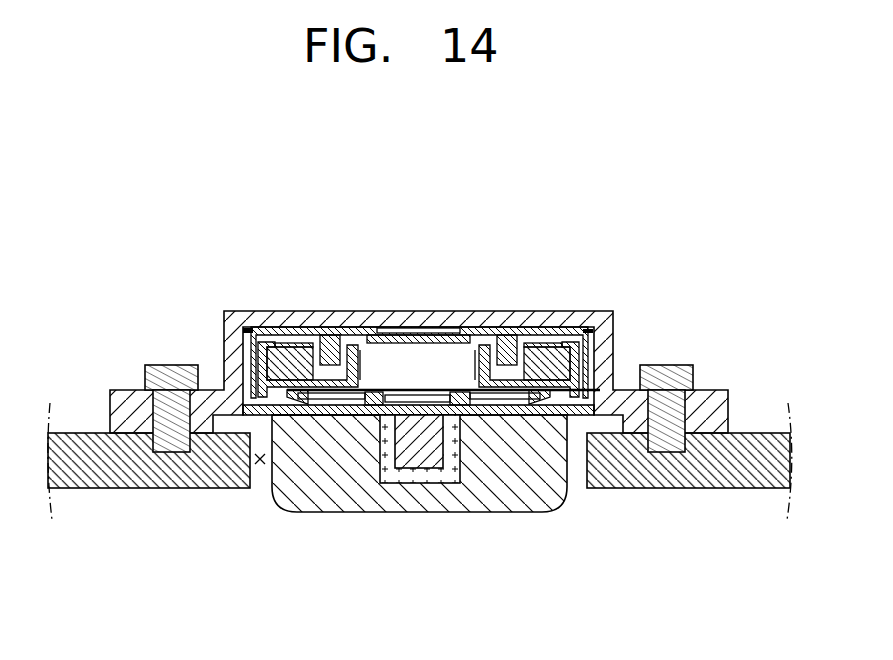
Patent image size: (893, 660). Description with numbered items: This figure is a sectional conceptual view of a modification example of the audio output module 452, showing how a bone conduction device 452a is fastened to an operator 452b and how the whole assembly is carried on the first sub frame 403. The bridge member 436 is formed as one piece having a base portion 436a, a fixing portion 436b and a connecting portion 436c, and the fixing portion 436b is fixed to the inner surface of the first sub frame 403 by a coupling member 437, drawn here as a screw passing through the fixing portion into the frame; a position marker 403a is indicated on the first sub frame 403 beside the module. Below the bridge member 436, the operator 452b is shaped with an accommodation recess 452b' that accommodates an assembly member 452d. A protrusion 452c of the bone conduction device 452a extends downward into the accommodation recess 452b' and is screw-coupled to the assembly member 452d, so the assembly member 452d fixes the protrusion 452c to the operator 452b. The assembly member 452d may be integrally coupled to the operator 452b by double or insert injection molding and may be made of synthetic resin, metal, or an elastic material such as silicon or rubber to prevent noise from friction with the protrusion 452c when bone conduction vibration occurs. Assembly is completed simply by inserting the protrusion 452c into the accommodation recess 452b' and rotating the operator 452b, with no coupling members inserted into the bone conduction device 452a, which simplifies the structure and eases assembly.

The first sub frame 403 is at (763, 478).
The mounting position on base plate 403a is at (260, 465).
The bridge member 436 is at (737, 228).
The base portion 436a is at (346, 320).
The fixing portion 436b is at (622, 390).
The connecting portion 436c is at (710, 397).
The coupling member 437 is at (168, 372).
The audio output module 452 is at (583, 578).
The bone conduction device 452a is at (479, 412).
The operator 452b is at (424, 499).
The accommodation recess 452b' is at (326, 499).
The protrusion 452c is at (420, 455).
The assembly member 452d is at (388, 460).